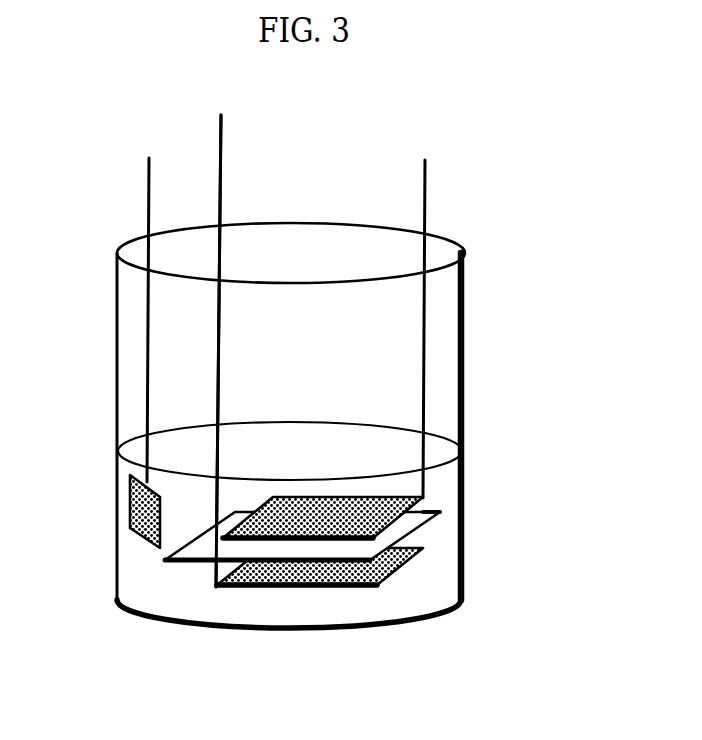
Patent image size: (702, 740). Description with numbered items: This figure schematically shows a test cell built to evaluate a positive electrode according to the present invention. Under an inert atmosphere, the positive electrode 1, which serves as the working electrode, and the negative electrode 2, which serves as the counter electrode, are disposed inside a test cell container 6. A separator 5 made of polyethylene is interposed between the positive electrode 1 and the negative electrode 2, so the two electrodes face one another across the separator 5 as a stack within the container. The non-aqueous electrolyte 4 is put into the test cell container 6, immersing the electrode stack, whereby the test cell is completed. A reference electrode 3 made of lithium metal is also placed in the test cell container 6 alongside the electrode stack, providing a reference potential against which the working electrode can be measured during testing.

The positive electrode 1 is at (221, 115).
The negative electrode 2 is at (425, 160).
The reference electrode 3 is at (149, 158).
The non-aqueous electrolyte 4 is at (441, 483).
The separator 5 is at (424, 528).
The test cell container 6 is at (463, 355).